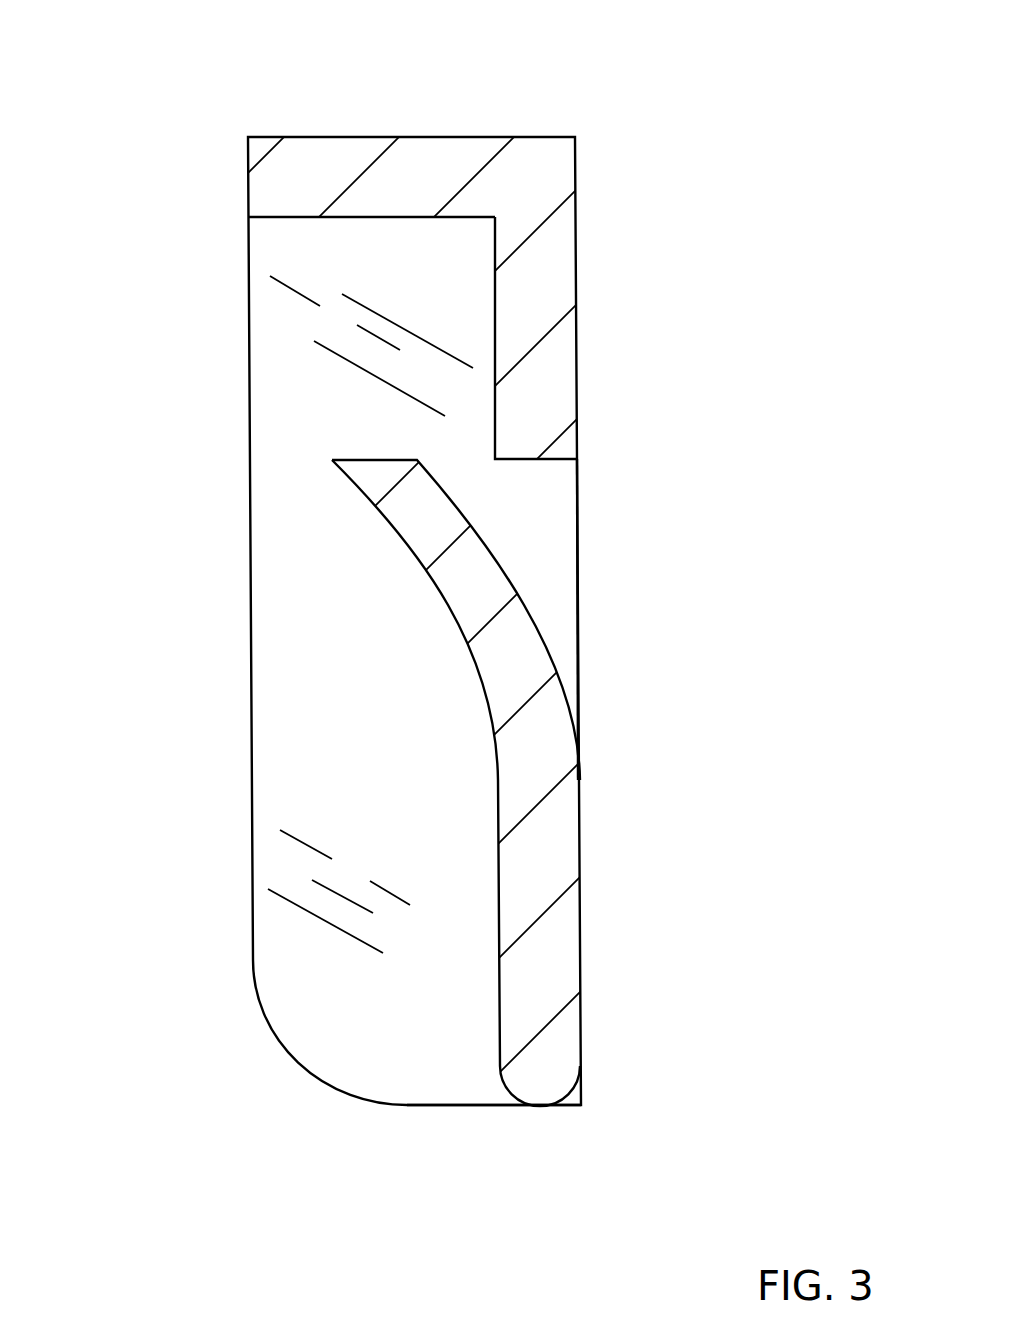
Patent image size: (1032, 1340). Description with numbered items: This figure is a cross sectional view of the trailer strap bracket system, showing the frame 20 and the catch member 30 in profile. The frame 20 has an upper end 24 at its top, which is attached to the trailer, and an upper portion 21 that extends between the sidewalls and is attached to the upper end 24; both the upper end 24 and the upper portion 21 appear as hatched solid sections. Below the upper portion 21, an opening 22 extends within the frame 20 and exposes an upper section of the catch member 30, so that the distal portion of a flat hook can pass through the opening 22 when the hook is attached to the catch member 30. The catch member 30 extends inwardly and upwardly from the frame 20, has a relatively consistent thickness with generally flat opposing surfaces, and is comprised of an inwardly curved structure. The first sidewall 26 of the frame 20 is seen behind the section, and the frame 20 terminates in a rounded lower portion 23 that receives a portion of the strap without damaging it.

The frame 20 is at (238, 166).
The upper portion 21 is at (552, 370).
The opening 22 is at (567, 502).
The lower portion 23 is at (542, 1105).
The upper end 24 is at (428, 155).
The first sidewall 26 is at (281, 702).
The catch member 30 is at (468, 592).